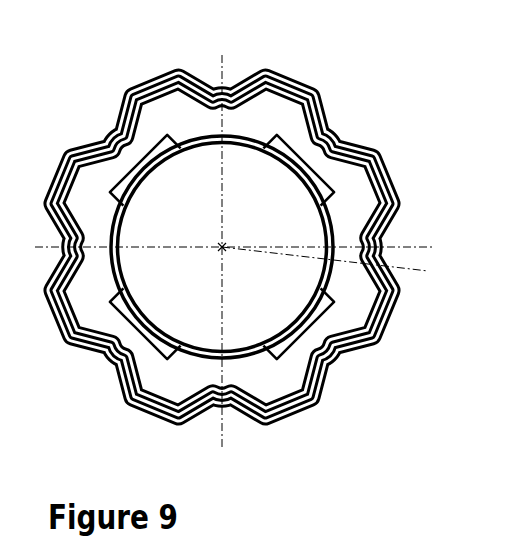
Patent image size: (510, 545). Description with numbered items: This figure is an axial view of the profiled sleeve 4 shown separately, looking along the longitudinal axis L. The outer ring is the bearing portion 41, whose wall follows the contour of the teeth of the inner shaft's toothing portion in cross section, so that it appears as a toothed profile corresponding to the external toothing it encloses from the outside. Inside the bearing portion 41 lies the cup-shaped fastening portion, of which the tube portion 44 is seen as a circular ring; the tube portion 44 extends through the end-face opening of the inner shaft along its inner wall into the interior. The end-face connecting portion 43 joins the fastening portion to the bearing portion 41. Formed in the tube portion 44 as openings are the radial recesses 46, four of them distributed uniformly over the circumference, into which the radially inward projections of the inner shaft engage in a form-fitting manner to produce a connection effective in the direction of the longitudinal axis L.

The profiled sleeve 4 is at (265, 227).
The bearing portion 41 is at (392, 301).
The end-face connecting portion 43 is at (350, 197).
The tube portion 44 is at (212, 352).
The radial recesses 46 is at (137, 163).
The longitudinal axis L is at (331, 268).